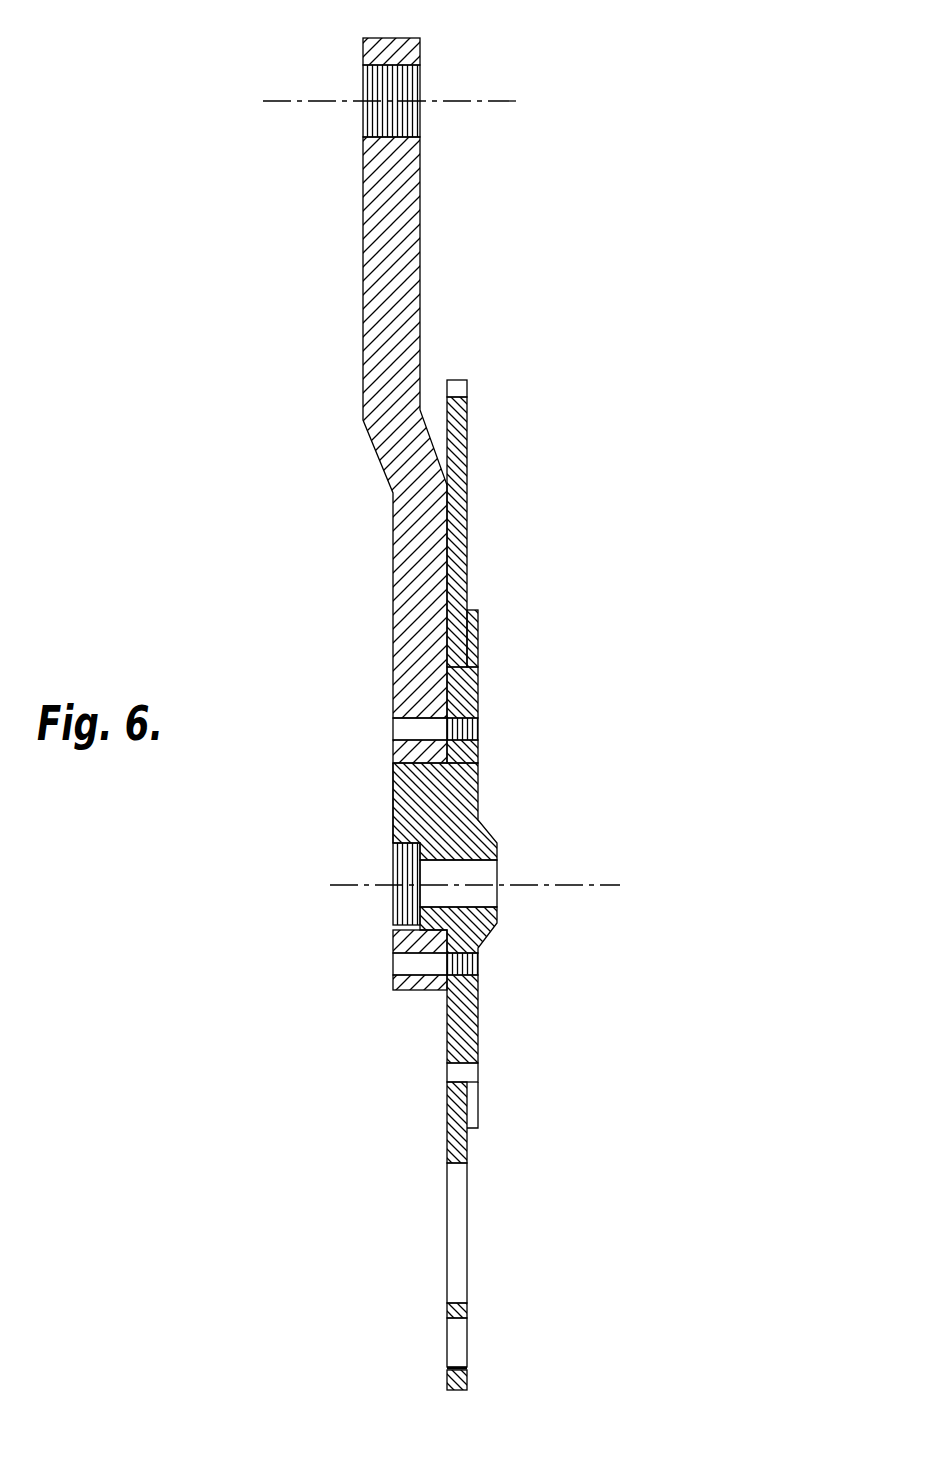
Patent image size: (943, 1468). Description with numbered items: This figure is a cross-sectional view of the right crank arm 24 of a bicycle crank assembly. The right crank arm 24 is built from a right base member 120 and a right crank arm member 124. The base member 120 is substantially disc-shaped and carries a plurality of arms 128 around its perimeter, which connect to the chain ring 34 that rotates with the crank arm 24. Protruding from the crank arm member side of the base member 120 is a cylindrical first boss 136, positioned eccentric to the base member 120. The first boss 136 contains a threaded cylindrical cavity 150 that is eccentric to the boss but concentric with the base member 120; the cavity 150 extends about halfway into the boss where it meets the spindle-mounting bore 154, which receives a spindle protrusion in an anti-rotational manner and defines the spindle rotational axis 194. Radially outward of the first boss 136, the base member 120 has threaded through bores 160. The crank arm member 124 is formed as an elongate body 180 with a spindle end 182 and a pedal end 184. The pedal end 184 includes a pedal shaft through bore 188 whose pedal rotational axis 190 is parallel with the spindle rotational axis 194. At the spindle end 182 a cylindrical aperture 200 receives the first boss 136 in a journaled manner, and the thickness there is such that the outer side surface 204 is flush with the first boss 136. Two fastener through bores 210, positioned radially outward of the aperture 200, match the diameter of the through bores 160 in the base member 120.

The right crank arm 24 is at (644, 537).
The chain ring 34 is at (470, 421).
The right base member 120 is at (455, 805).
The right crank arm member 124 is at (368, 470).
The arms 128 is at (480, 640).
The first boss 136 is at (393, 812).
The threaded cylindrical cavity 150 is at (395, 853).
The spindle-mounting bore 154 is at (470, 899).
The through bores 160 is at (468, 737).
The elongate body 180 is at (363, 277).
The spindle end 182 is at (393, 980).
The pedal end 184 is at (363, 53).
The pedal shaft through bore 188 is at (392, 68).
The pedal rotational axis 190 is at (291, 108).
The spindle rotational axis 194 is at (560, 885).
The cylindrical aperture 200 is at (393, 771).
The outer side surface 204 is at (393, 676).
The fastener through bores 210 is at (395, 736).